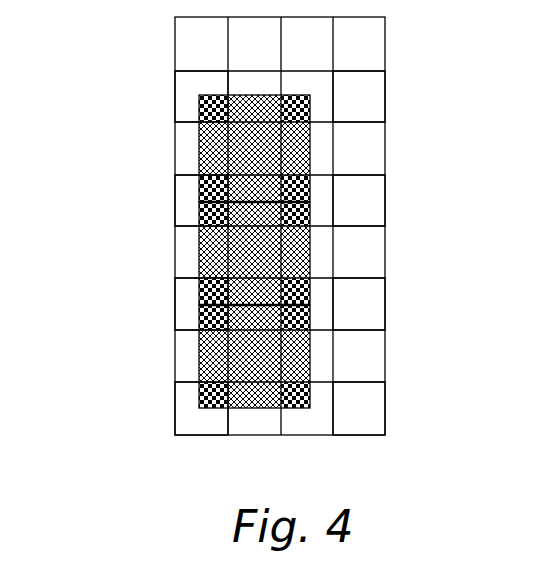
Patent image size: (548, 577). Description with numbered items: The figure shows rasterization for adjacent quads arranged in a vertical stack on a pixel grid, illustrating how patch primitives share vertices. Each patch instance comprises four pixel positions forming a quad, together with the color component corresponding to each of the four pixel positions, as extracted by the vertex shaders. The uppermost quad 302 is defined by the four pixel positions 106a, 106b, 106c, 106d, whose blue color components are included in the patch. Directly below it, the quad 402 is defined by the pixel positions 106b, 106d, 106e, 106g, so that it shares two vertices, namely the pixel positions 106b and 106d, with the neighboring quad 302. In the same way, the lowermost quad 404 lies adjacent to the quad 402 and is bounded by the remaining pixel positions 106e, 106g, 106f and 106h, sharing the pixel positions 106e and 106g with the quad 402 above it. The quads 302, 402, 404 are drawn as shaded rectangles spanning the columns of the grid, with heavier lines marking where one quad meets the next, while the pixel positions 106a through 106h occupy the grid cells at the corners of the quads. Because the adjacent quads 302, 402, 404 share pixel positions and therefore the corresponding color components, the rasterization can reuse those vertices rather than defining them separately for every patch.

The pixel position 106a is at (175, 92).
The pixel position 106b is at (175, 210).
The pixel position 106c is at (333, 85).
The pixel position 106d is at (333, 192).
The pixel position 106e is at (175, 307).
The pixel position 106f is at (175, 425).
The pixel position 106g is at (333, 297).
The pixel position 106h is at (333, 405).
The quad 302 is at (199, 153).
The quad 402 is at (199, 252).
The quad 404 is at (199, 355).